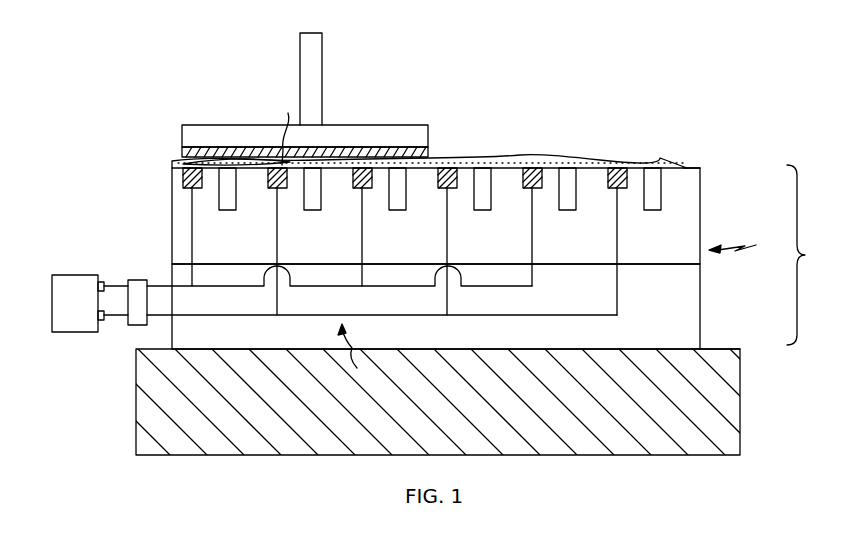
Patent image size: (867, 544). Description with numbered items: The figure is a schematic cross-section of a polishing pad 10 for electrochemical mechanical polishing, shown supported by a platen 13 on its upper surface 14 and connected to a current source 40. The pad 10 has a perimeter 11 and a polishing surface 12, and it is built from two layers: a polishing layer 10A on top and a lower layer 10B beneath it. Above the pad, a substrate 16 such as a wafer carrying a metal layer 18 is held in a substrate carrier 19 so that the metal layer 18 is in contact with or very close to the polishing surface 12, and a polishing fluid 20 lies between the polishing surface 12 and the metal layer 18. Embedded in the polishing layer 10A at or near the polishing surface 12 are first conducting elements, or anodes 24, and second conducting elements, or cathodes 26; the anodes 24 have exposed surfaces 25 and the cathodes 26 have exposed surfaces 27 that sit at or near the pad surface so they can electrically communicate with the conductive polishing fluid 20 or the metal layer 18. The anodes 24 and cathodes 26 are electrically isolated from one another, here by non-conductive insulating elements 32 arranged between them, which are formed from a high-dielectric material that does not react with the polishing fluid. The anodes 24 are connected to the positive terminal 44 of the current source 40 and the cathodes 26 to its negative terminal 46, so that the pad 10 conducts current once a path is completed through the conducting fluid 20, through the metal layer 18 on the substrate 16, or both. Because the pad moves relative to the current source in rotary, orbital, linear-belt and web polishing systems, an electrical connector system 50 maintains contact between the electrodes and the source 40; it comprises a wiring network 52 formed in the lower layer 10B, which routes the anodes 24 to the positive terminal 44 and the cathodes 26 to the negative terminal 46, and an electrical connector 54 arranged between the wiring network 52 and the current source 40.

The polishing pad 10 is at (811, 255).
The polishing layer 10A is at (700, 198).
The lower layer 10B is at (700, 280).
The perimeter 11 is at (748, 243).
The polishing surface 12 is at (680, 165).
The platen 13 is at (740, 402).
The upper surface 14 is at (719, 349).
The substrate 16 is at (414, 128).
The metal layer 18 is at (430, 152).
The substrate carrier 19 is at (318, 55).
The polishing fluid 20 is at (540, 157).
The anodes 24 is at (183, 182).
The anode surface 25 is at (183, 164).
The cathodes 26 is at (272, 190).
The cathode surface 27 is at (284, 128).
The non-conductive elements 32 is at (228, 212).
The current source 40 is at (52, 313).
The positive terminal 44 is at (104, 284).
The negative terminal 46 is at (104, 324).
The electrical connector system 50 is at (358, 361).
The wiring network 52 is at (532, 287).
The electrical connector 54 is at (140, 280).